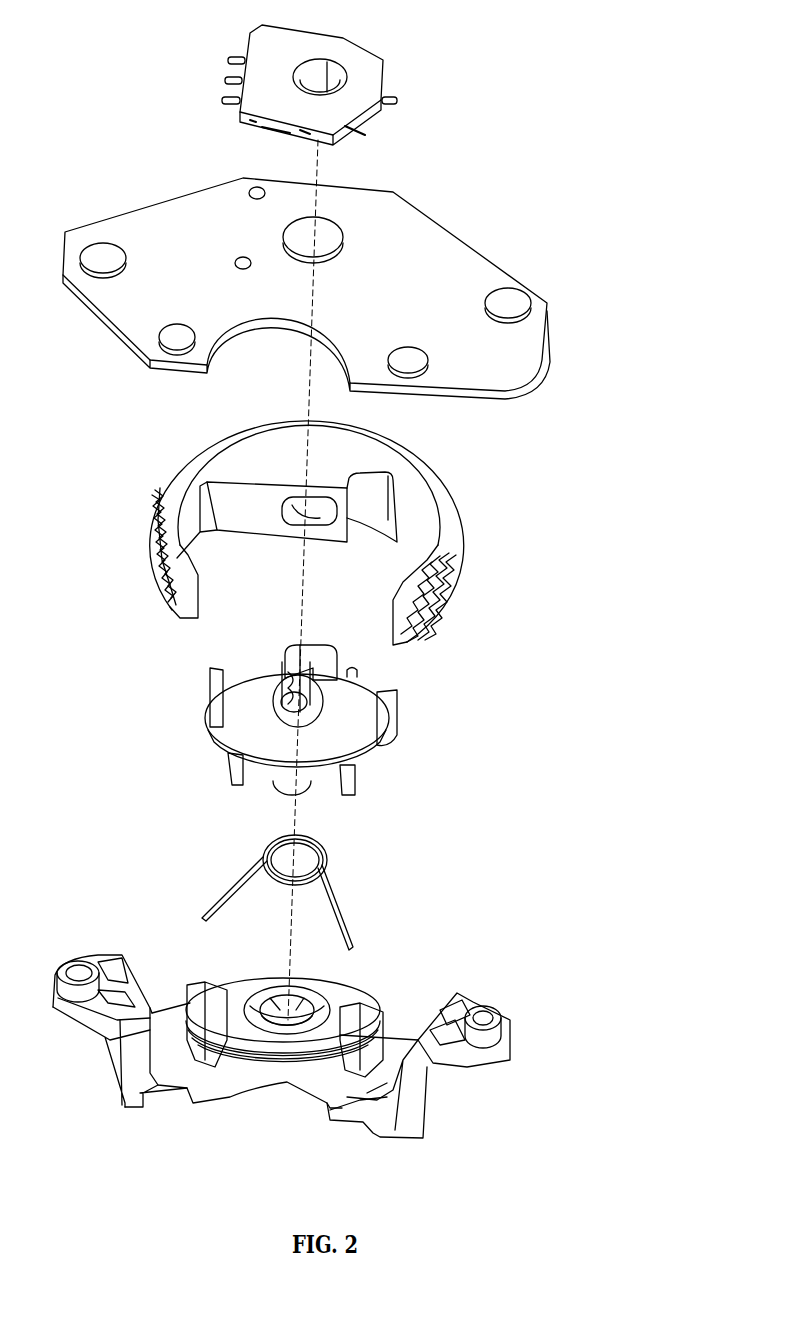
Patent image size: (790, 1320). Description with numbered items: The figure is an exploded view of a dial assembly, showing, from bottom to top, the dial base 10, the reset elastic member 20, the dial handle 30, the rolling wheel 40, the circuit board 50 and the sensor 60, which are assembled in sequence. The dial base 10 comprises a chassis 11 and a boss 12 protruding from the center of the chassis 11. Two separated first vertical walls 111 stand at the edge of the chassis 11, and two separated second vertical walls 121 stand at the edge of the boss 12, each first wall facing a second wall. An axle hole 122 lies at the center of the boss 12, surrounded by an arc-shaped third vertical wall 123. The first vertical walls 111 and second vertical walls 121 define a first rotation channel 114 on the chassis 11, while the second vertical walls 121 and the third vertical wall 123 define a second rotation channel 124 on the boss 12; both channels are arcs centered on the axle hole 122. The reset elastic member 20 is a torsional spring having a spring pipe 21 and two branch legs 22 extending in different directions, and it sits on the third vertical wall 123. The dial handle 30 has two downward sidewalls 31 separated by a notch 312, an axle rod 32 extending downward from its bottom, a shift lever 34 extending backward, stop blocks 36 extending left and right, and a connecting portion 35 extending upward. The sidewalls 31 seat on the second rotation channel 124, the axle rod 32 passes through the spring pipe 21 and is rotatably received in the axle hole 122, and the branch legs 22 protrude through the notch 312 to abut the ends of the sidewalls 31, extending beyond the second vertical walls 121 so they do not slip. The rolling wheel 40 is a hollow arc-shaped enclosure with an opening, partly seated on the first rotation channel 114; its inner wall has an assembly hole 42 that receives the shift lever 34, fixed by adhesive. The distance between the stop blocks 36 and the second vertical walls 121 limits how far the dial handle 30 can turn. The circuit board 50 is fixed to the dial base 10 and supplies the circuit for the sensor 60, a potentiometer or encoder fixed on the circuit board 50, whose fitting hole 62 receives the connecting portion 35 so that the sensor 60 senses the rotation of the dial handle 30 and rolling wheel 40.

The dial base 10 is at (525, 1002).
The chassis 11 is at (323, 1107).
The first vertical walls 111 is at (418, 1040).
The first rotation channel 114 is at (370, 1092).
The boss 12 is at (240, 1058).
The second vertical walls 121 is at (373, 1008).
The axle hole 122 is at (283, 1003).
The third vertical wall 123 is at (323, 997).
The second rotation channel 124 is at (238, 1010).
The reset elastic member 20 is at (225, 873).
The spring pipe 21 is at (303, 862).
The branch legs 22 is at (342, 905).
The dial handle 30 is at (197, 700).
The sidewalls 31 is at (363, 768).
The notch 312 is at (253, 782).
The axle rod 32 is at (297, 788).
The shift lever 34 is at (315, 662).
The connecting portion 35 is at (275, 688).
The stop blocks 36 is at (385, 722).
The rolling wheel 40 is at (435, 502).
The assembly hole 42 is at (323, 517).
The circuit board 50 is at (463, 258).
The sensor 60 is at (367, 73).
The fitting hole 62 is at (320, 63).